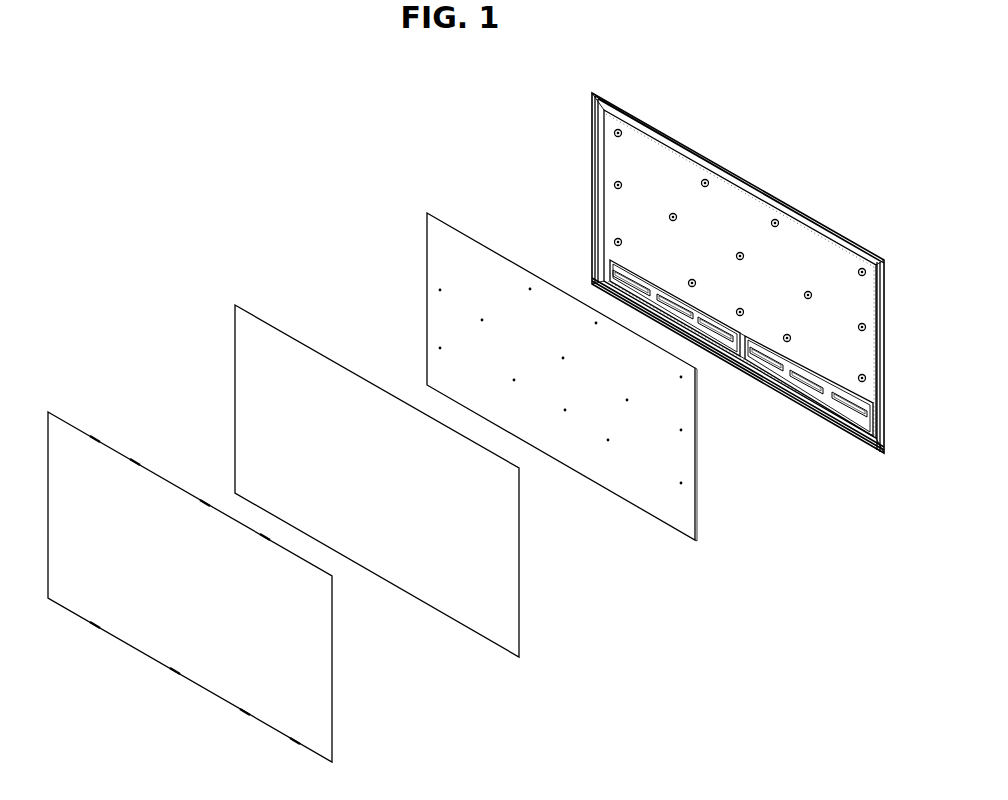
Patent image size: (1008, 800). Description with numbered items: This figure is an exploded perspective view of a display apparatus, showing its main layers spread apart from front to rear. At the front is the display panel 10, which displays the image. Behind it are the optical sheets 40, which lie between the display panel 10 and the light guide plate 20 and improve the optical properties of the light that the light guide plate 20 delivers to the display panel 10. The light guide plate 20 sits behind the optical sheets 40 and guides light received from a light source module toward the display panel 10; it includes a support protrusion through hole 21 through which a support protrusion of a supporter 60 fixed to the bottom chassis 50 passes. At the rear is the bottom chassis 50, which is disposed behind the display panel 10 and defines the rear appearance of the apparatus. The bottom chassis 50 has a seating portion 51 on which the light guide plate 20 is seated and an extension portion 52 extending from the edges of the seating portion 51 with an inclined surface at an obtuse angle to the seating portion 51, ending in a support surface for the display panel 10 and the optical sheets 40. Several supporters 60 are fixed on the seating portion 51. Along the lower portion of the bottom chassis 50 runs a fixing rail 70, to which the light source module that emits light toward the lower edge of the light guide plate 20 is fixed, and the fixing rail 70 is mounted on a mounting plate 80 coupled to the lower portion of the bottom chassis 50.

The display panel 10 is at (62, 412).
The light guide plate 20 is at (543, 345).
The support protrusion through hole 21 is at (440, 239).
The optical sheets 40 is at (253, 305).
The bottom chassis 50 is at (711, 247).
The seating portion 51 is at (730, 212).
The extension portion 52 is at (601, 141).
The supporter 60 is at (613, 185).
The fixing rail 70 is at (741, 370).
The mounting plate 80 is at (788, 385).